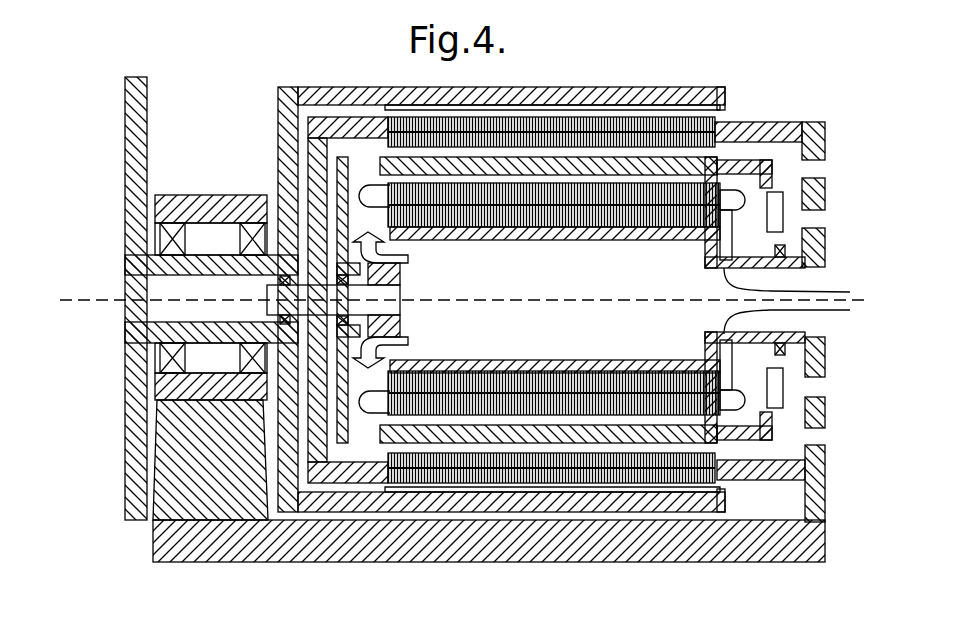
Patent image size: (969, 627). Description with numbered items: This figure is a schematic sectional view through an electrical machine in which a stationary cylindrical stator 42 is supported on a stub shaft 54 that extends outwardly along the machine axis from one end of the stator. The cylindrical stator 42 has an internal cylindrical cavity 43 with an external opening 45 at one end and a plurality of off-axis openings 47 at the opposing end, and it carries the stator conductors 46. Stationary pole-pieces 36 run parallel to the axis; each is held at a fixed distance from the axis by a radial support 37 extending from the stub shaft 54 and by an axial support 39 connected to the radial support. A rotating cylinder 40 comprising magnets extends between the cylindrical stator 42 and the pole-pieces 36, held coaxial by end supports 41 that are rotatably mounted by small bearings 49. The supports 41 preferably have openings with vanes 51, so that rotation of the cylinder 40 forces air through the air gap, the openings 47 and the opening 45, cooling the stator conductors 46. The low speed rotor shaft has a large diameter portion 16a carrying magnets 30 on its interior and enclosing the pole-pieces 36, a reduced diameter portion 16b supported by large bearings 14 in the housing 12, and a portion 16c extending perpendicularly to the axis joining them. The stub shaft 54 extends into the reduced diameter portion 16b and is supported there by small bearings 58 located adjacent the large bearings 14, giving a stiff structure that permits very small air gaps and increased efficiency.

The housing 12 is at (258, 548).
The large bearings 14 is at (160, 355).
The large diameter portion 16a is at (368, 88).
The reduced diameter portion 16b is at (125, 258).
The connecting portion 16c is at (283, 122).
The magnets 30 is at (605, 105).
The stationary pole-pieces 36 is at (541, 113).
The radial support 37 is at (318, 165).
The axial support 39 is at (345, 122).
The cylinder 40 is at (693, 153).
The supports 41 is at (775, 168).
The cylindrical stator 42 is at (578, 207).
The internal cylindrical cavity 43 is at (343, 196).
The external opening 45 is at (815, 280).
The stator conductors 46 is at (733, 192).
The off-axis openings 47 is at (410, 344).
The small bearings 49 is at (785, 250).
The vane 51 is at (790, 207).
The stub shaft 54 is at (373, 311).
The small bearings 58 is at (272, 318).